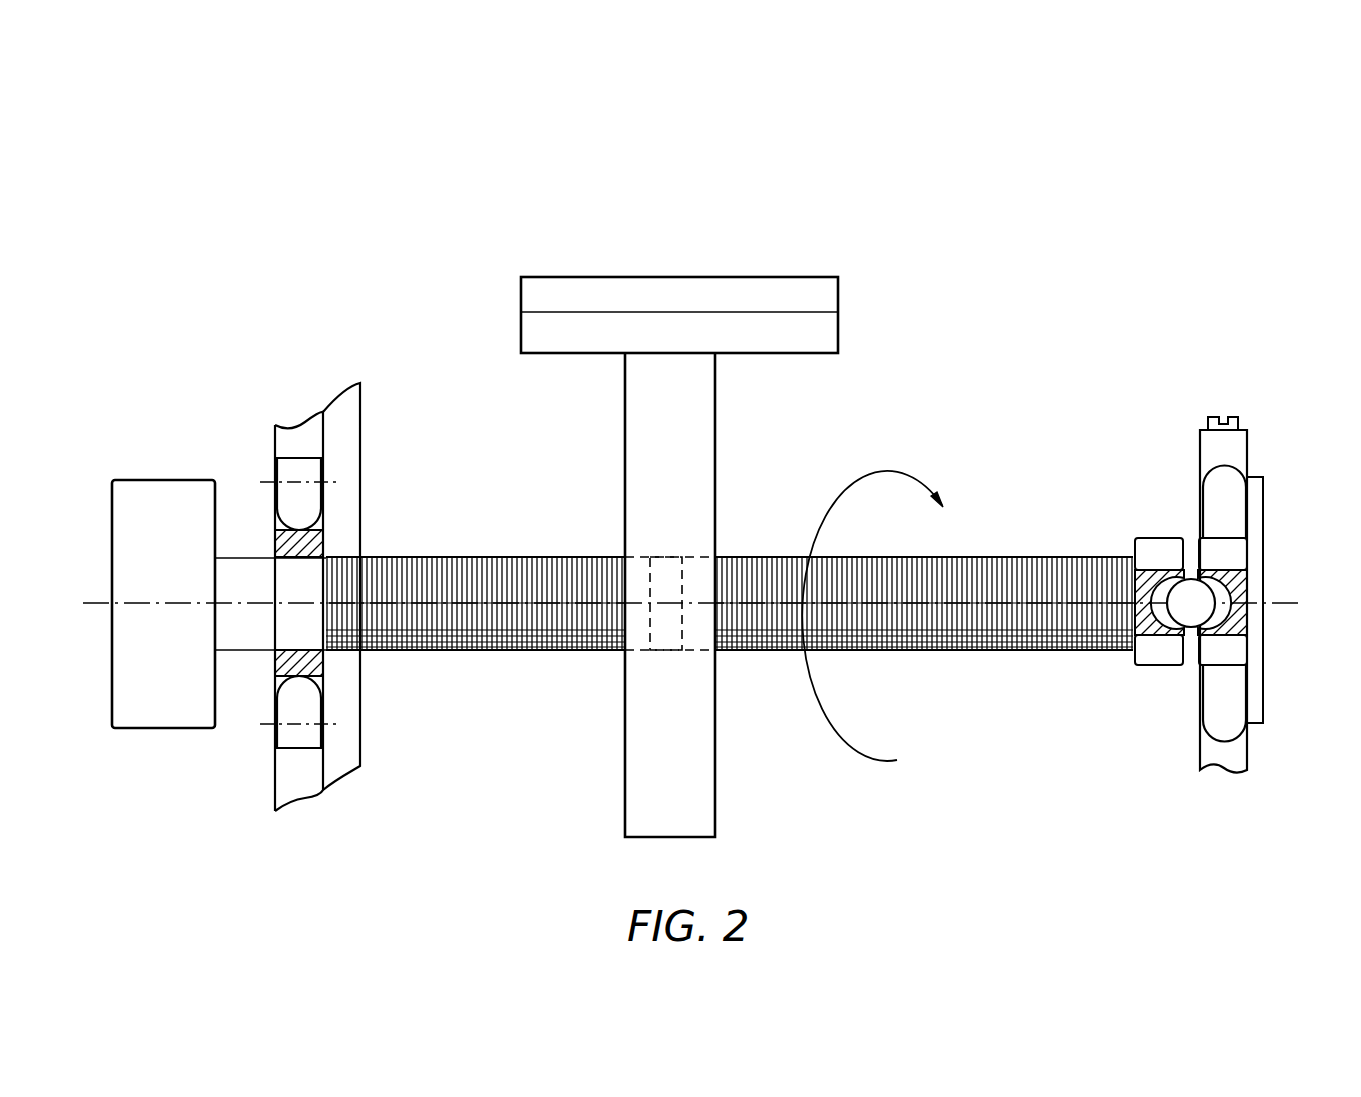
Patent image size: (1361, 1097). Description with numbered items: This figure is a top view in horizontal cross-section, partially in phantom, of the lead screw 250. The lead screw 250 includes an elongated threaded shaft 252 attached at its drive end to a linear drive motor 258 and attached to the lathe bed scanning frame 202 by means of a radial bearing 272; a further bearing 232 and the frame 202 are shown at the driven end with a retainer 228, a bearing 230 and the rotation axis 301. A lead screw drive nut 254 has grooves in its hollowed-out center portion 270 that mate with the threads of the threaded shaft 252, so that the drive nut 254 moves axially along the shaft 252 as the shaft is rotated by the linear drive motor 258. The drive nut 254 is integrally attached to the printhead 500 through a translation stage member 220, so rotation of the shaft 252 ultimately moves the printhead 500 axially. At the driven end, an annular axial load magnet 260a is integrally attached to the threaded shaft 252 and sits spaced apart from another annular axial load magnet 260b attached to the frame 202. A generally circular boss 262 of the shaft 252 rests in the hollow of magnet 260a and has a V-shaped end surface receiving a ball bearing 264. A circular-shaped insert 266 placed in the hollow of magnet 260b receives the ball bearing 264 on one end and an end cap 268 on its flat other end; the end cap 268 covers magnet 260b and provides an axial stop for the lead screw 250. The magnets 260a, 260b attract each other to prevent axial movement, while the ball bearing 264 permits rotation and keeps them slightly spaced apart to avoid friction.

The lead screw 250 is at (520, 242).
The printhead 500 is at (521, 285).
The translation stage member 220 is at (521, 328).
The linear drive motor 258 is at (163, 480).
The left bearing 232 is at (275, 502).
The radial bearing 272 is at (326, 552).
The threaded shaft 252 is at (423, 652).
The lathe bed scanning frame 202 is at (275, 761).
The hollowed-out center portion 270 is at (625, 655).
The lead screw drive nut 254 is at (627, 828).
The retaining tab 228 is at (1232, 417).
The axial load magnet 260a is at (1157, 538).
The boss 262 is at (1137, 580).
The ball bearing 264 is at (1133, 650).
The axial load magnet 260b is at (1205, 655).
The end cap 268 is at (1262, 507).
The axis of rotation 301 is at (1298, 601).
The circular-shaped insert 266 is at (1243, 623).
The right bearing 230 is at (1252, 732).